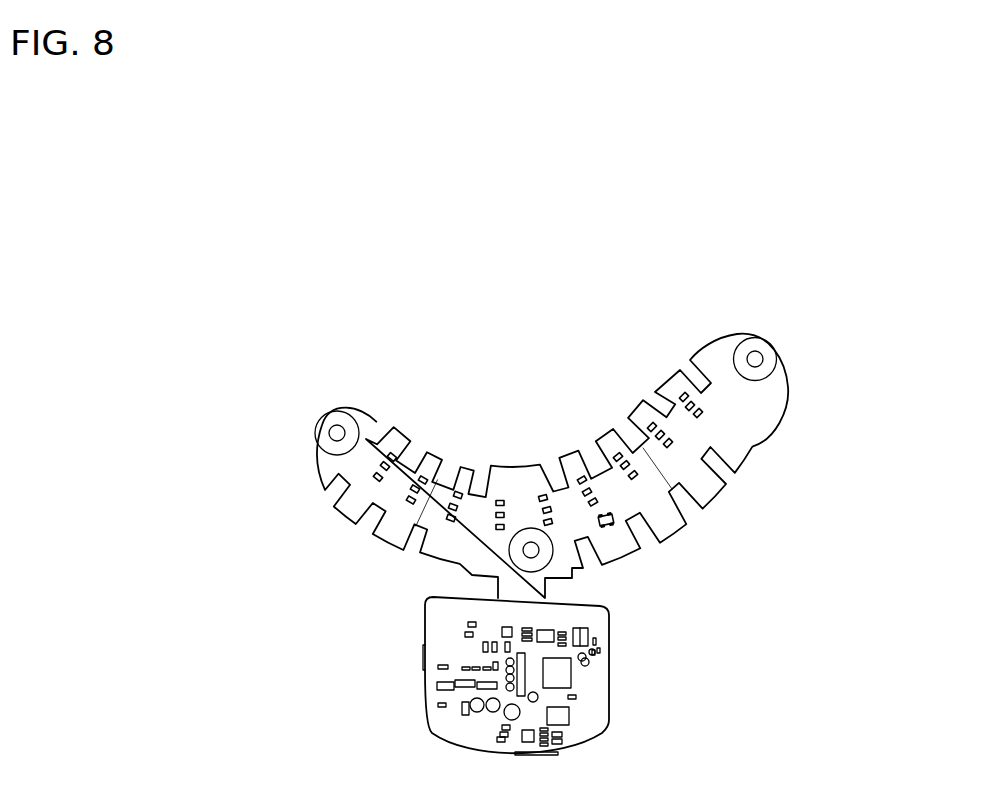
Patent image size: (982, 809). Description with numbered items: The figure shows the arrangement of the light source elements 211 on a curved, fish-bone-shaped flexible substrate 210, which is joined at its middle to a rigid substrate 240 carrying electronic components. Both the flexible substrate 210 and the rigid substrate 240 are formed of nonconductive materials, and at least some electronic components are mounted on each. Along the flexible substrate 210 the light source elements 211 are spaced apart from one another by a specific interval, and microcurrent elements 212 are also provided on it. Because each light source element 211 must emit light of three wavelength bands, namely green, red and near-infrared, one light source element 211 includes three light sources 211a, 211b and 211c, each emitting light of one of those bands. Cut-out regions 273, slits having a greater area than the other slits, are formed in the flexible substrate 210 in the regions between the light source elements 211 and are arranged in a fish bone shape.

The flexible substrate 210 is at (322, 384).
The microcurrent element 212 is at (762, 346).
The light source element 211 is at (793, 400).
The light source 211a is at (688, 396).
The light source 211b is at (694, 405).
The light source 211c is at (702, 412).
The cut-out region 273 is at (725, 476).
The rigid substrate 240 is at (396, 661).